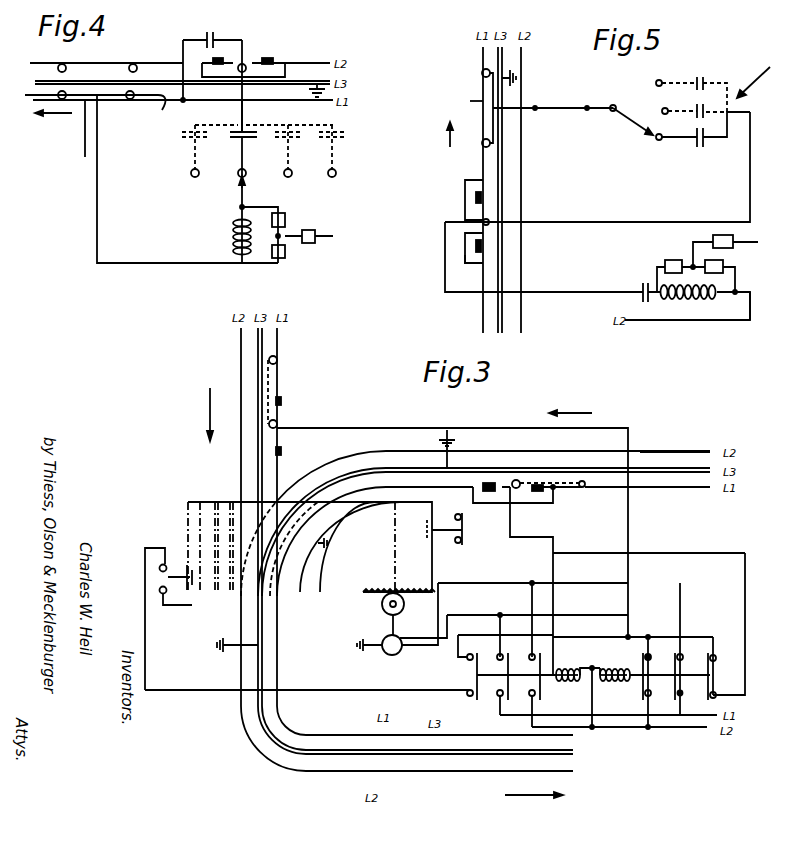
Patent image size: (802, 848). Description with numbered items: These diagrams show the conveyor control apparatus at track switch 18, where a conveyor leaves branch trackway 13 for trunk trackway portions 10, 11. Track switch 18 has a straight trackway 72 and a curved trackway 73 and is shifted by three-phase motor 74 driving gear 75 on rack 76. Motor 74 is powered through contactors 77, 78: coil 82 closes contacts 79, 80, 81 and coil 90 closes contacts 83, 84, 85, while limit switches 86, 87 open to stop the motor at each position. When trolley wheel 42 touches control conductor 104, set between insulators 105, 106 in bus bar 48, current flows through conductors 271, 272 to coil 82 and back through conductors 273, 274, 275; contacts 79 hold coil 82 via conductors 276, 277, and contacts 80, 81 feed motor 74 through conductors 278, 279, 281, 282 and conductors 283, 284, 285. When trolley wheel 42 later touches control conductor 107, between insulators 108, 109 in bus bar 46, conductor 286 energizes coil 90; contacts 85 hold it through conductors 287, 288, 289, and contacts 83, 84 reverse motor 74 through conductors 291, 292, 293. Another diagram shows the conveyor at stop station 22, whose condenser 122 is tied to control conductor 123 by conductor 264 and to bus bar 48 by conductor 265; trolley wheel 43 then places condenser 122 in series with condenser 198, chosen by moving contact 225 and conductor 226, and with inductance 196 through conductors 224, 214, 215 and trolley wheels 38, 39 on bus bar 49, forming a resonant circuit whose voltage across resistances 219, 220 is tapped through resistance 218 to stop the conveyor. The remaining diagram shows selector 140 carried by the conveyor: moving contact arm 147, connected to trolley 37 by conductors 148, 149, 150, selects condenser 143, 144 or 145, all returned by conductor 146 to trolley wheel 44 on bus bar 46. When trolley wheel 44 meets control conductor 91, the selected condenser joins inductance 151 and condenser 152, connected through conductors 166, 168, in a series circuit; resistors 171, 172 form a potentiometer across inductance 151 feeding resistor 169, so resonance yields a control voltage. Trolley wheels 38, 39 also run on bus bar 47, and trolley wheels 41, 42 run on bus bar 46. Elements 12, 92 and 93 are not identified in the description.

In FIG. 3, the trunk trackway portion 10 is at (257, 458).
In FIG. 3, the trunk trackway portion 11 is at (548, 772).
In FIG. 5, the line conductor L3 12 is at (505, 182).
In FIG. 3, the branch trackway 13 is at (362, 470).
In FIG. 3, the track switch 18 is at (365, 593).
In FIG. 4, the stop station 22 is at (250, 58).
In FIG. 5, the current collecting trolley 37 is at (466, 100).
In FIG. 4, the trolley wheel 38 is at (145, 55).
In FIG. 4, the trolley wheel 39 is at (58, 64).
In FIG. 4, the trolley wheel 41 is at (158, 112).
In FIG. 5, the trolley wheel 41 is at (482, 142).
In FIG. 3, the trolley wheel 41 is at (278, 356).
In FIG. 4, the trolley wheel 42 is at (57, 94).
In FIG. 5, the trolley wheel 42 is at (482, 72).
In FIG. 3, the trolley wheel 42 is at (268, 425).
In FIG. 4, the trolley wheel 43 is at (240, 72).
In FIG. 5, the trolley wheel 44 is at (480, 220).
In FIG. 5, the bus bar 46 is at (480, 321).
In FIG. 3, the bus bar 46 is at (278, 362).
In FIG. 5, the bus bar 47 is at (523, 322).
In FIG. 4, the bus bar 48 is at (263, 140).
In FIG. 3, the bus bar 48 is at (655, 489).
In FIG. 4, the bus bar 49 is at (302, 62).
In FIG. 3, the bus bar 49 is at (665, 452).
In FIG. 3, the straight trackway 72 is at (258, 516).
In FIG. 3, the curved trackway 73 is at (320, 578).
In FIG. 3, the three-phase motor 74 is at (398, 660).
In FIG. 3, the gear 75 is at (405, 608).
In FIG. 3, the rack 76 is at (402, 592).
In FIG. 3, the contactor 77 is at (566, 691).
In FIG. 3, the contactor 78 is at (616, 691).
In FIG. 3, the contacts 79 is at (470, 675).
In FIG. 3, the contacts 80 is at (490, 688).
In FIG. 3, the contacts 81 is at (522, 688).
In FIG. 3, the coil 82 is at (576, 617).
In FIG. 3, the contacts 83 is at (659, 676).
In FIG. 3, the contacts 84 is at (689, 676).
In FIG. 3, the contacts 85 is at (716, 668).
In FIG. 3, the limit switch 86 is at (158, 612).
In FIG. 3, the limit switch 87 is at (452, 544).
In FIG. 3, the coil 90 is at (616, 670).
In FIG. 5, the control conductor 91 is at (475, 228).
In FIG. 5, the contact 92 is at (470, 262).
In FIG. 5, the contact 93 is at (462, 190).
In FIG. 3, the control conductor 104 is at (517, 490).
In FIG. 3, the insulator 105 is at (486, 497).
In FIG. 3, the insulator 106 is at (543, 492).
In FIG. 3, the control conductor 107 is at (280, 420).
In FIG. 3, the insulator 108 is at (284, 395).
In FIG. 3, the insulator 109 is at (284, 450).
In FIG. 4, the condenser 122 is at (212, 34).
In FIG. 4, the control conductor 123 is at (234, 63).
In FIG. 5, the selector 140 is at (758, 81).
In FIG. 5, the condenser 143 is at (695, 146).
In FIG. 5, the condenser 144 is at (675, 142).
In FIG. 5, the condenser 145 is at (705, 78).
In FIG. 5, the conductor 146 is at (751, 172).
In FIG. 5, the moving contact arm 147 is at (630, 128).
In FIG. 5, the conductor 148 is at (604, 106).
In FIG. 5, the conductor 149 is at (566, 108).
In FIG. 4, the conductor 150 is at (84, 130).
In FIG. 5, the conductor 150 is at (530, 107).
In FIG. 5, the inductance 151 is at (706, 302).
In FIG. 5, the condenser 152 is at (641, 290).
In FIG. 5, the conductor 166 is at (752, 312).
In FIG. 5, the conductor 168 is at (543, 291).
In FIG. 5, the resistor 169 is at (740, 238).
In FIG. 5, the resistor 171 is at (724, 262).
In FIG. 5, the resistor 172 is at (680, 252).
In FIG. 4, the inductance 196 is at (234, 240).
In FIG. 4, the condenser 198 is at (246, 131).
In FIG. 4, the conductor 214 is at (125, 262).
In FIG. 4, the conductor 215 is at (99, 125).
In FIG. 4, the resistance 218 is at (312, 230).
In FIG. 4, the resistance 219 is at (285, 214).
In FIG. 4, the resistor 220 is at (285, 255).
In FIG. 4, the conductor 224 is at (240, 108).
In FIG. 4, the moving contact 225 is at (262, 183).
In FIG. 4, the conductor 226 is at (240, 206).
In FIG. 4, the conductor 264 is at (244, 38).
In FIG. 4, the conductor 265 is at (183, 48).
In FIG. 3, the conductor 271 is at (567, 540).
In FIG. 3, the conductor 272 is at (558, 646).
In FIG. 3, the conductor 273 is at (603, 730).
In FIG. 3, the conductor 274 is at (645, 730).
In FIG. 3, the conductor 275 is at (697, 730).
In FIG. 3, the conductor 276 is at (188, 690).
In FIG. 3, the conductor 277 is at (488, 634).
In FIG. 3, the conductor 278 is at (700, 695).
In FIG. 3, the conductor 279 is at (518, 716).
In FIG. 3, the conductor 281 is at (518, 606).
In FIG. 3, the conductor 282 is at (455, 616).
In FIG. 3, the conductor 283 is at (543, 730).
In FIG. 3, the conductor 284 is at (532, 582).
In FIG. 3, the conductor 285 is at (482, 582).
In FIG. 3, the conductor 286 is at (406, 428).
In FIG. 3, the conductor 287 is at (746, 572).
In FIG. 3, the conductor 288 is at (697, 636).
In FIG. 3, the conductor 289 is at (634, 638).
In FIG. 3, the conductor 291 is at (681, 583).
In FIG. 3, the conductor 292 is at (650, 697).
In FIG. 3, the conductor 293 is at (578, 618).